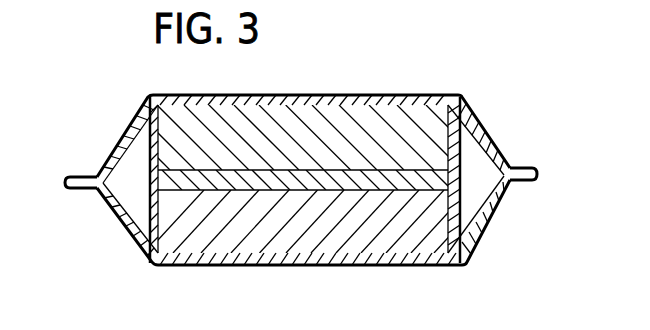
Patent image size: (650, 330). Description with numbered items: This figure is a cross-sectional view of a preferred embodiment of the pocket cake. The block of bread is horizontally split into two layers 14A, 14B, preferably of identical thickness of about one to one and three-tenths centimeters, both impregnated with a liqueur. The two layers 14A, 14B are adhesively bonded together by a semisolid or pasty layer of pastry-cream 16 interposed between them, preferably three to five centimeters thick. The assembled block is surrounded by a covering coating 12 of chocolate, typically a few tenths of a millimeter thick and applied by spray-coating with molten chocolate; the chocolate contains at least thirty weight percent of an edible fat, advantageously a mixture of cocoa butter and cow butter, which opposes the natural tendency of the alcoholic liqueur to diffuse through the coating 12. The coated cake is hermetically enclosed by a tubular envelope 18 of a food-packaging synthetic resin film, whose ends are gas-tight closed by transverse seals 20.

The covering coating 12 is at (460, 138).
The upper layer of bread 14A is at (327, 130).
The lower layer of bread 14B is at (418, 227).
The pastry-cream layer 16 is at (155, 184).
The tubular envelope 18 is at (127, 130).
The transverse seals 20 is at (68, 176).